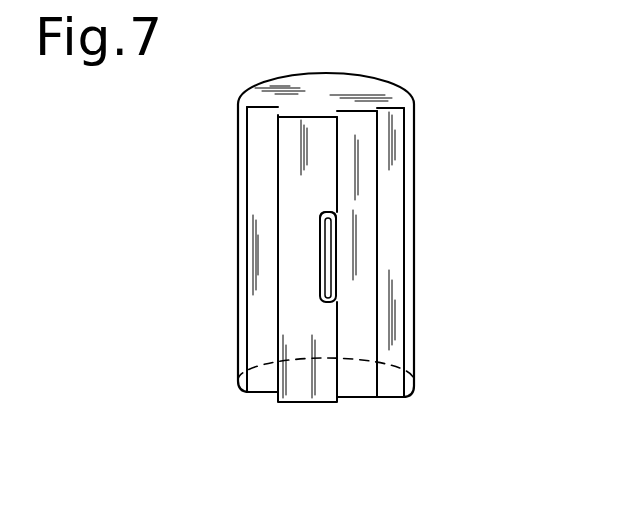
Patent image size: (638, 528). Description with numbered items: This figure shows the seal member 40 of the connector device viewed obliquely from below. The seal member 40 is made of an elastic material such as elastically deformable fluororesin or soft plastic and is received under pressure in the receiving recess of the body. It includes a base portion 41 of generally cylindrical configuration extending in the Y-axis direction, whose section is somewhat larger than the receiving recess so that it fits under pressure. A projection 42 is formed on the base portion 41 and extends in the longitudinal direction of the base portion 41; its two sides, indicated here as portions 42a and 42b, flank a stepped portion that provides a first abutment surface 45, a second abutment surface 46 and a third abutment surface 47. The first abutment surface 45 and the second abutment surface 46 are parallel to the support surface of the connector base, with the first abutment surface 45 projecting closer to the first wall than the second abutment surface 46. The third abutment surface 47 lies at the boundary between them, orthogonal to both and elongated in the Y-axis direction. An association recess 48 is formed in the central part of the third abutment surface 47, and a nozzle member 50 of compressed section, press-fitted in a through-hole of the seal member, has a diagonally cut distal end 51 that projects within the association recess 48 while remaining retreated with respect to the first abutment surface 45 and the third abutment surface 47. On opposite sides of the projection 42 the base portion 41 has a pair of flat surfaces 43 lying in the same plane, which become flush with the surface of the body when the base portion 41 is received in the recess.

The seal member 40 is at (417, 148).
The base portion 41 is at (395, 81).
The projection 42 is at (314, 406).
The left body portion 42a is at (275, 311).
The right body portion 42b is at (377, 338).
The flat surfaces 43 is at (263, 144).
The first abutment surface 45 is at (293, 275).
The second abutment surface 46 is at (370, 265).
The third abutment surface 47 is at (335, 156).
The association recess 48 is at (333, 260).
The nozzle member 50 is at (334, 290).
The distal end 51 is at (338, 227).